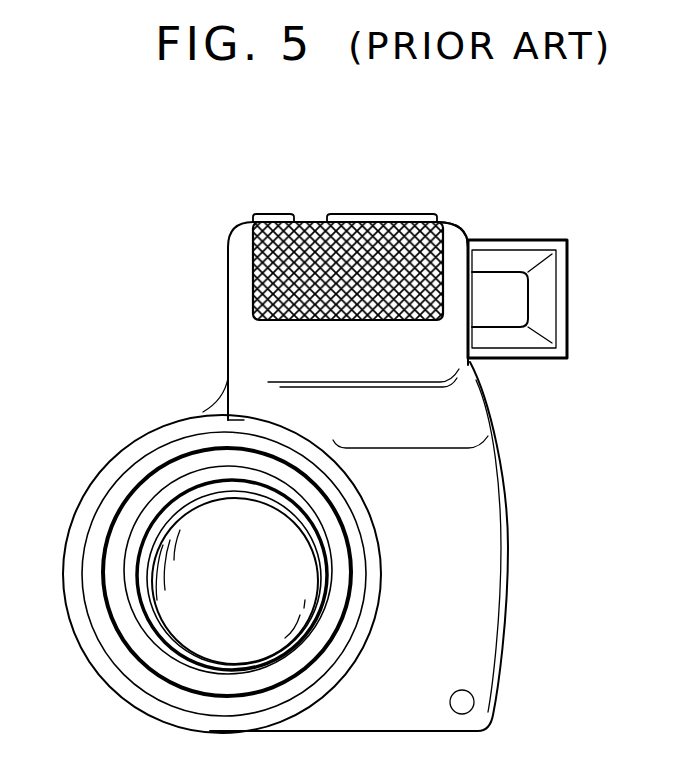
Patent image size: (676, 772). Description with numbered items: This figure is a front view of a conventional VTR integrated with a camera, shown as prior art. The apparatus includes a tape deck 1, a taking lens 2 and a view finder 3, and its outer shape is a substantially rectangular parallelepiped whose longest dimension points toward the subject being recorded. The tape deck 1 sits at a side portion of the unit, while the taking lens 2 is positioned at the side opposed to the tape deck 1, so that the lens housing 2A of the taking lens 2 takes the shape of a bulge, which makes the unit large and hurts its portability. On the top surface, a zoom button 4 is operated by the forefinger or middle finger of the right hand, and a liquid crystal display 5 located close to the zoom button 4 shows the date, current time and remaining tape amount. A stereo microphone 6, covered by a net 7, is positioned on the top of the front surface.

The tape deck 1 is at (510, 547).
The taking lens 2 is at (186, 488).
The lens housing 2A is at (107, 462).
The view finder 3 is at (568, 288).
The zoom button 4 is at (270, 216).
The liquid crystal display 5 is at (393, 214).
The stereo microphone 6 is at (292, 323).
The net 7 is at (455, 222).